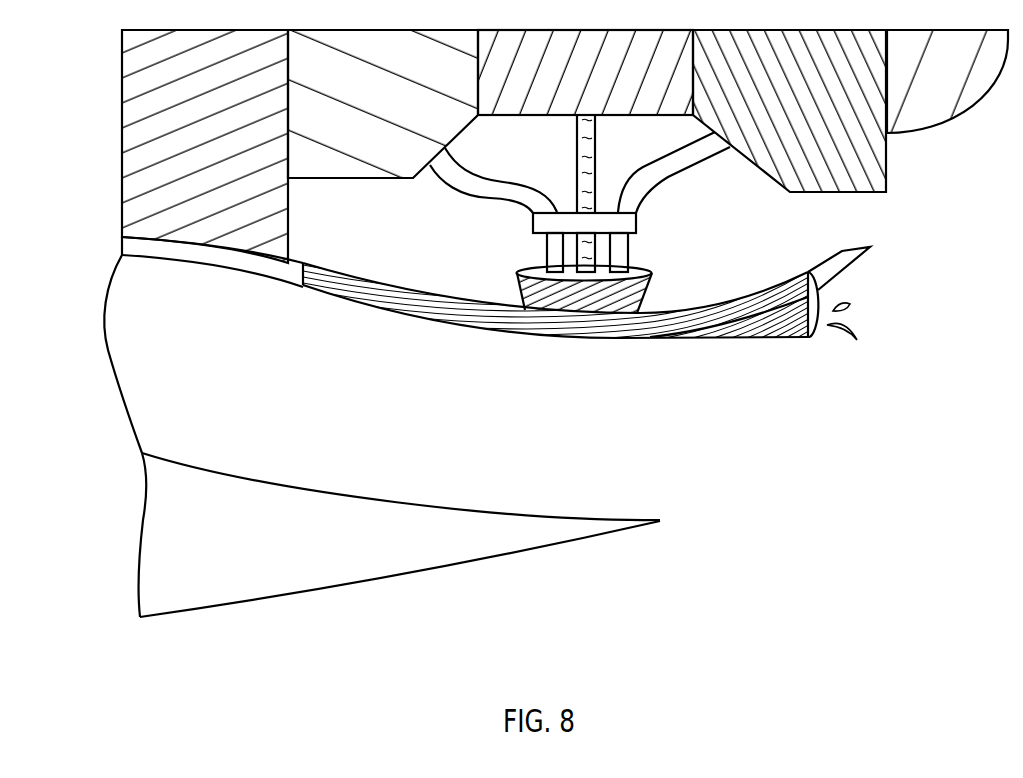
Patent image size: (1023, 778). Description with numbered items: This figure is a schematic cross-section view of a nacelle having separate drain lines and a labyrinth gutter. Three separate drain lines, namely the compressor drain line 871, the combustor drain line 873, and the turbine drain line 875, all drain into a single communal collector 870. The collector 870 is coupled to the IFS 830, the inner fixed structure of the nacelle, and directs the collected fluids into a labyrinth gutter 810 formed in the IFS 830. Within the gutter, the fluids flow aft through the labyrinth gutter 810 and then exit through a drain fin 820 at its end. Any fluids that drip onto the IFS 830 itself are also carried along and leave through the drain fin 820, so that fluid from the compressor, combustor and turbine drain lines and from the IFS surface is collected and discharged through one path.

The labyrinth gutter 810 is at (640, 340).
The drain fin 820 is at (778, 337).
The IFS 830 is at (262, 278).
The communal collector 870 is at (653, 277).
The compressor drain line 871 is at (478, 197).
The combustor drain line 873 is at (576, 145).
The turbine drain line 875 is at (670, 180).